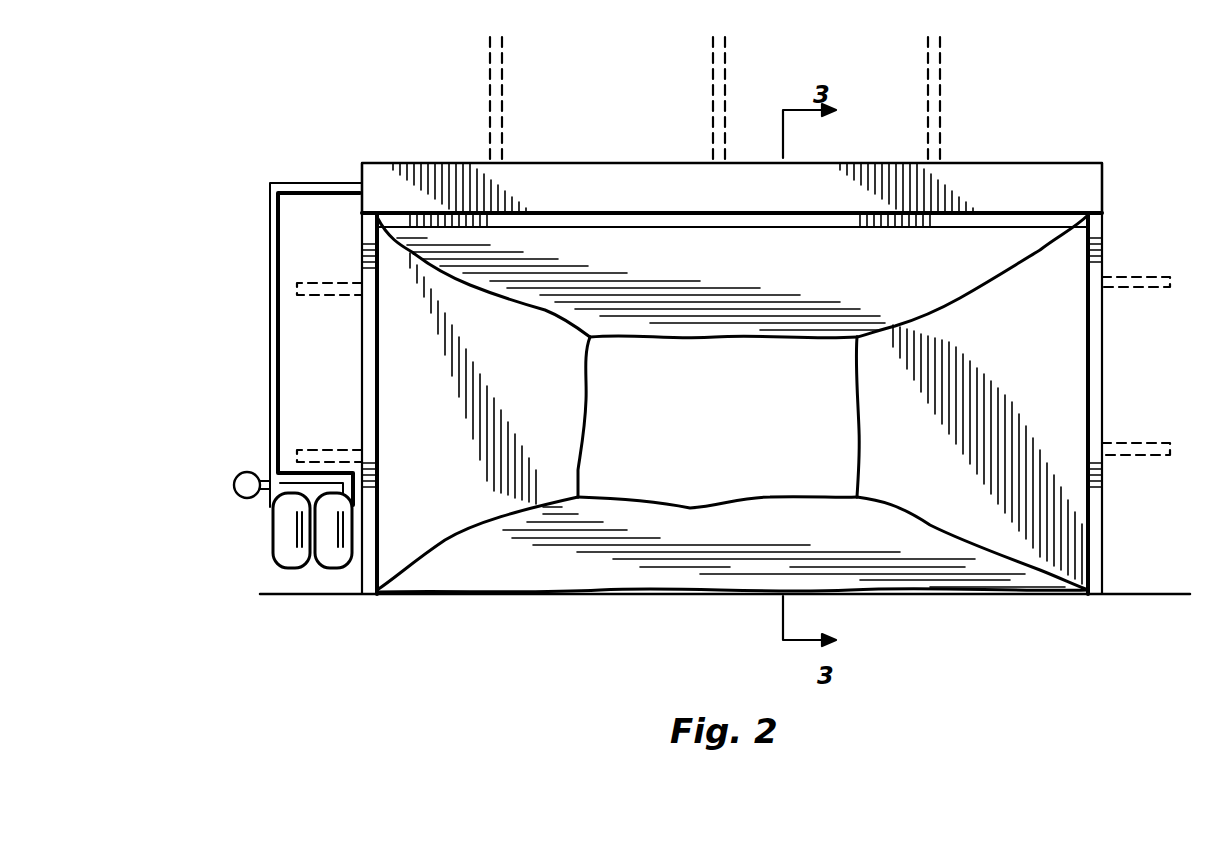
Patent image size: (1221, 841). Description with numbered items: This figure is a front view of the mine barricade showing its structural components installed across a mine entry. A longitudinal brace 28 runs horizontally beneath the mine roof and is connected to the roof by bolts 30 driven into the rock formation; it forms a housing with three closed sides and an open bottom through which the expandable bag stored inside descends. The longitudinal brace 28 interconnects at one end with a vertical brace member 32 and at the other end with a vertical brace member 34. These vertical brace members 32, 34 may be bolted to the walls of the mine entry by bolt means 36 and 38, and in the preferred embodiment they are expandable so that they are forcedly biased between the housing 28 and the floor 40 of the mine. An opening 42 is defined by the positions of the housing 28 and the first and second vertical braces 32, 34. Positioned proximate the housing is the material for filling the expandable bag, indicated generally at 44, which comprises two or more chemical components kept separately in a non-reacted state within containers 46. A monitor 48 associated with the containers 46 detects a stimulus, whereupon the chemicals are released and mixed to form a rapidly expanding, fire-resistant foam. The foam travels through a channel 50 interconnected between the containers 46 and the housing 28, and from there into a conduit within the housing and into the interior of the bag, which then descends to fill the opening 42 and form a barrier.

The longitudinal brace 28 is at (1013, 175).
The bolts 30 is at (713, 75).
The vertical brace member 32 is at (1087, 391).
The vertical brace member 34 is at (373, 413).
The bolt means 36 is at (1166, 288).
The bolt means 38 is at (318, 296).
The floor 40 is at (732, 549).
The opening 42 is at (718, 422).
The material for filling the expandable bag 44 is at (260, 582).
The containers 46 is at (330, 558).
The monitor 48 is at (234, 486).
The channel 50 is at (270, 368).